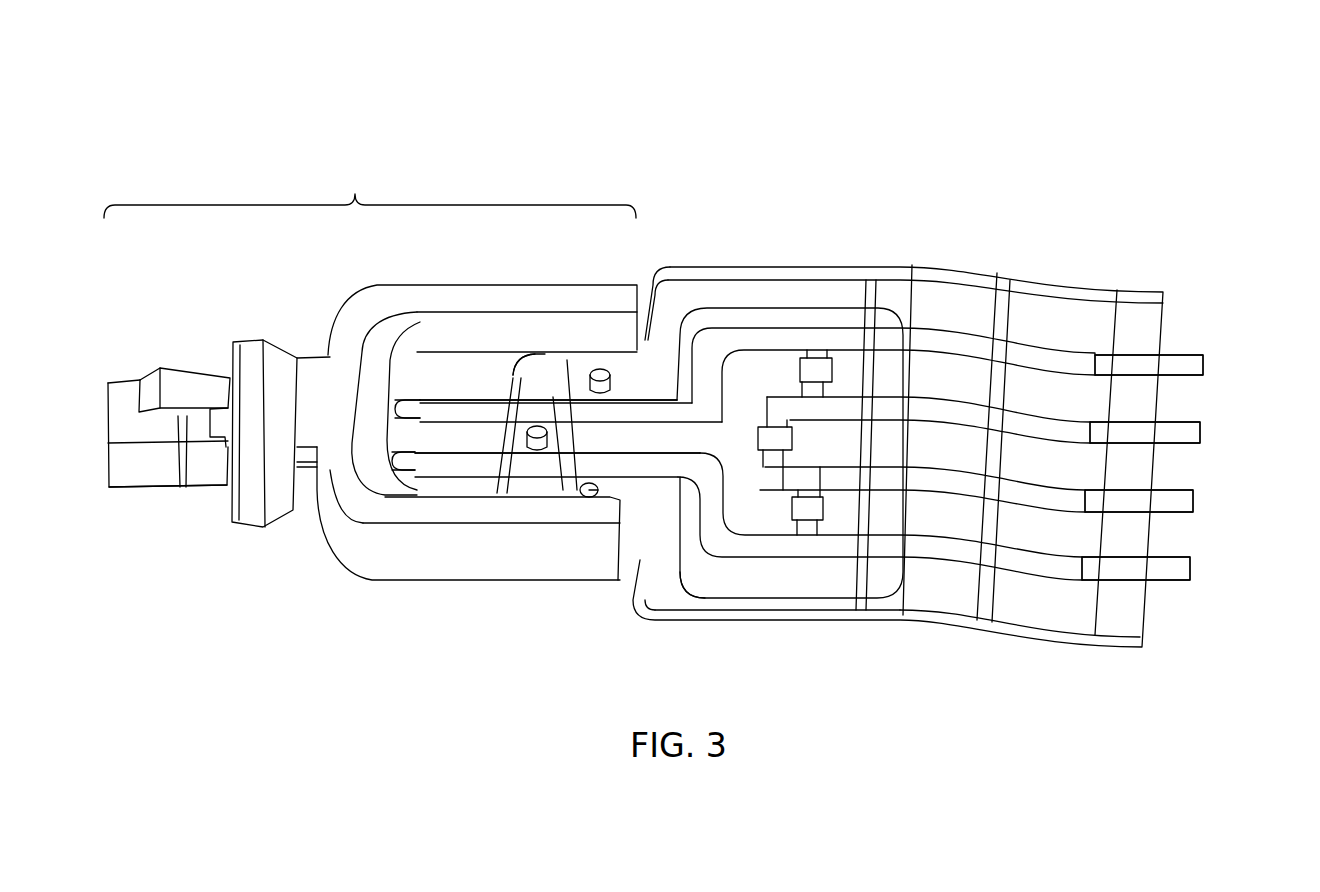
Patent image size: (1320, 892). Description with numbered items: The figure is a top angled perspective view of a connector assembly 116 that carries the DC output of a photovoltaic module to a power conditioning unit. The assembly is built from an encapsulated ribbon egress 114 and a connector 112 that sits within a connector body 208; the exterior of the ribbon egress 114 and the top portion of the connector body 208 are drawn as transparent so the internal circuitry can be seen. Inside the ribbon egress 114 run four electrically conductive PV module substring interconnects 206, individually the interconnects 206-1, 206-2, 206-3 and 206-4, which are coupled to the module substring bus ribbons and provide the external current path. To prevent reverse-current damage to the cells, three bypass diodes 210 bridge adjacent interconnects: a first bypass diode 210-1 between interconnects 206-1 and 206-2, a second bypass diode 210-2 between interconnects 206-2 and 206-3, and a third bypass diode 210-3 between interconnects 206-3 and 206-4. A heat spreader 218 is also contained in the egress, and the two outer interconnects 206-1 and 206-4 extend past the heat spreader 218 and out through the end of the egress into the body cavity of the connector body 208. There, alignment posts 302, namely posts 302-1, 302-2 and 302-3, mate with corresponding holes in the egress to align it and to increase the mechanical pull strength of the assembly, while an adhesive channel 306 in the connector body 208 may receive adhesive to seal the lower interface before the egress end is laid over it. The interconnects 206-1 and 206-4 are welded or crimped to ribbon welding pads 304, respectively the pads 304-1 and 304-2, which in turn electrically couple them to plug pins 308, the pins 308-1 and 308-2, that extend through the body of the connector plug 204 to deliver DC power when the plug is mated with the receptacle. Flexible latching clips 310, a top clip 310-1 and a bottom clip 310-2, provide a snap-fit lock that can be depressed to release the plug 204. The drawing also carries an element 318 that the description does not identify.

The connector 112 is at (370, 189).
The encapsulated ribbon egress 114 is at (700, 268).
The connector assembly 116 is at (1172, 123).
The connector plug 204 is at (113, 378).
The PV module substring interconnects 206 is at (1220, 306).
The first PV module substring interconnect 206-1 is at (1213, 368).
The second PV module substring interconnect 206-2 is at (1207, 435).
The third PV module substring interconnect 206-3 is at (1200, 504).
The fourth PV module substring interconnect 206-4 is at (1197, 573).
The connector body 208 is at (348, 305).
The bypass diodes 210 is at (898, 216).
The first bypass diode 210-1 is at (818, 360).
The second bypass diode 210-2 is at (773, 437).
The third bypass diode 210-3 is at (805, 525).
The heat spreader 218 is at (703, 600).
The alignment posts 302 is at (608, 352).
The first alignment post 302-1 is at (570, 377).
The second alignment post 302-2 is at (537, 425).
The third alignment post 302-3 is at (618, 505).
The ribbon welding pads 304 is at (368, 629).
The first ribbon welding pad 304-1 is at (427, 400).
The second ribbon welding pad 304-2 is at (426, 500).
The adhesive channel 306 is at (537, 500).
The plug pins 308 is at (326, 259).
The first plug pin 308-1 is at (407, 403).
The second plug pin 308-2 is at (400, 463).
The latching clips 310 is at (209, 296).
The first latching clip 310-1 is at (195, 387).
The second latching clip 310-2 is at (152, 494).
The fold line 318 is at (937, 600).